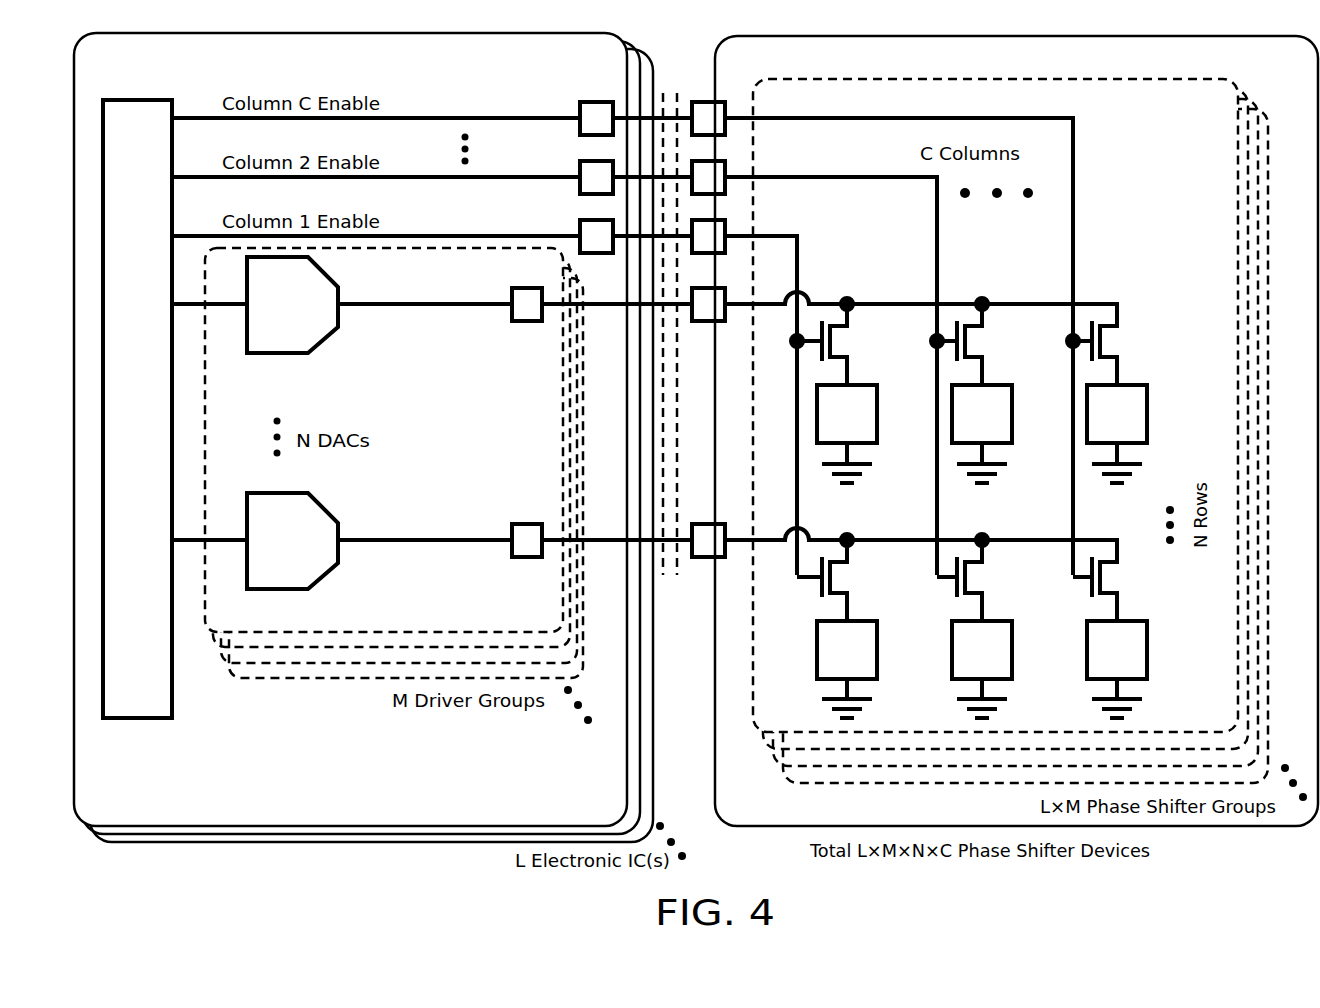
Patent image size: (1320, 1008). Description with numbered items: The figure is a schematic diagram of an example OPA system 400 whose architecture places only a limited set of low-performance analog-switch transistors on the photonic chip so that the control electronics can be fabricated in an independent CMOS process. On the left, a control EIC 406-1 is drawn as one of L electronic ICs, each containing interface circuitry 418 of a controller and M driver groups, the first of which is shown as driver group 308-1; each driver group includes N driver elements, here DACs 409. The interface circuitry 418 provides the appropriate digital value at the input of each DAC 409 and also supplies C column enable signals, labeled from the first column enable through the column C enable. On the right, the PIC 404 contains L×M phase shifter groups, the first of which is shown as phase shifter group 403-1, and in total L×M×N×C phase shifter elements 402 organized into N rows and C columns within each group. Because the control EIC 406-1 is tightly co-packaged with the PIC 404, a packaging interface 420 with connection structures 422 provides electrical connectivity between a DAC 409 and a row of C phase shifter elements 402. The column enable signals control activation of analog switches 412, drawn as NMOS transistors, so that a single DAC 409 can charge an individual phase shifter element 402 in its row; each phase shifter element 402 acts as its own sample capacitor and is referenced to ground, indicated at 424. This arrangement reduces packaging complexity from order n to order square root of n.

The OPA system 400 is at (696, 421).
The PIC 404 is at (1295, 74).
The control EIC 406-1 is at (500, 61).
The interface circuitry 418 is at (152, 144).
The phase shifter group 403-1 is at (1185, 111).
The driver group 308-1 is at (536, 276).
The DAC 409 is at (331, 347).
The connection structures 422 is at (601, 101).
The packaging interface 420 is at (679, 93).
The phase shifter element 402 is at (878, 402).
The analog switch 412 is at (1139, 314).
The ground connection 424 is at (1157, 690).